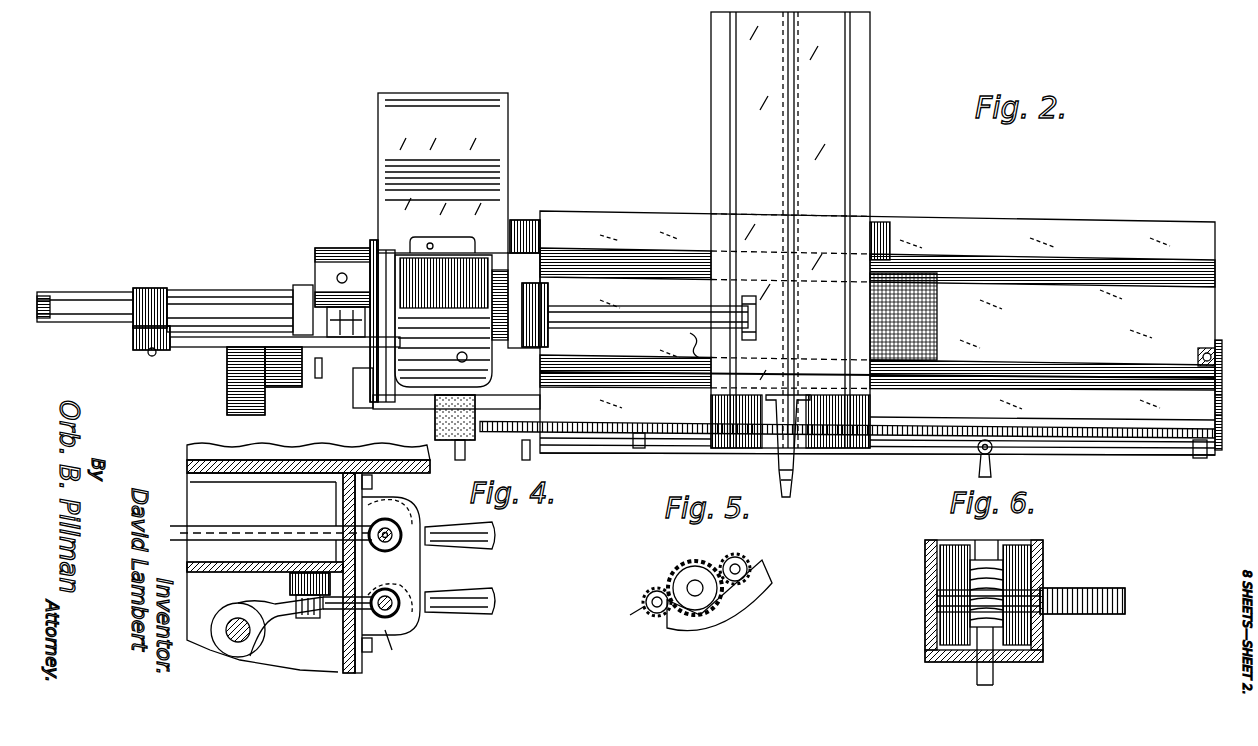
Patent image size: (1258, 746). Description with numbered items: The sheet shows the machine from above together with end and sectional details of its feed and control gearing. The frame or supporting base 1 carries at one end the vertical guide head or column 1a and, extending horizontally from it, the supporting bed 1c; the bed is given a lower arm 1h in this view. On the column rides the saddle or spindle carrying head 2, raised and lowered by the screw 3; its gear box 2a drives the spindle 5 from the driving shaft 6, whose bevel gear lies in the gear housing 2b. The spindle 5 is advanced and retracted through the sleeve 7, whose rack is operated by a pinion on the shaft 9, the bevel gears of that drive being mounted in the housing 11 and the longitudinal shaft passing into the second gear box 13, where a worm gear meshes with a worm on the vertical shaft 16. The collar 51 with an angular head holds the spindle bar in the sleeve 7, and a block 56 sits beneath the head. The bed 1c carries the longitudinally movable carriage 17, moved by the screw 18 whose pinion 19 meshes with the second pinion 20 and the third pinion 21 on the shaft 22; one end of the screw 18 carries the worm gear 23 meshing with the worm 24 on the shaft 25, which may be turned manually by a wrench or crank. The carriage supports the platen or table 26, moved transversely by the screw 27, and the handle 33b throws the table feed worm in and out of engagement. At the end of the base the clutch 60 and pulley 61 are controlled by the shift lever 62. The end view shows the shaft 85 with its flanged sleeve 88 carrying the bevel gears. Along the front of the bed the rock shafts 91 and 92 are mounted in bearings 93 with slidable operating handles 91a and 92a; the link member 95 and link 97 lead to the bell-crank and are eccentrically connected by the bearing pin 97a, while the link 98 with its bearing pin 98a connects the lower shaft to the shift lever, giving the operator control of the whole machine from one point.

In FIG. 2, the frame or supporting base 1 is at (532, 218).
In FIG. 2, the vertical guide head or column 1a is at (395, 200).
In FIG. 2, the supporting bed 1c is at (1062, 226).
In FIG. 2, the arm 1h is at (200, 348).
In FIG. 2, the saddle or spindle carrying head 2 is at (505, 295).
In FIG. 2, the gear box 2a is at (443, 321).
In FIG. 2, the gear housing 2b is at (313, 283).
In FIG. 2, the screw 3 is at (430, 243).
In FIG. 2, the spindle 5 is at (585, 312).
In FIG. 2, the driving shaft 6 is at (337, 276).
In FIG. 2, the sleeve 7 is at (108, 300).
In FIG. 2, the shaft 9 is at (156, 354).
In FIG. 2, the casing or housing 11 is at (133, 345).
In FIG. 2, the second gear box 13 is at (380, 390).
In FIG. 2, the vertical shaft 16 is at (462, 352).
In FIG. 2, the carriage 17 is at (1042, 419).
In FIG. 2, the screw 18 is at (680, 434).
In FIG. 5, the screw 18 is at (645, 608).
In FIG. 6, the screw 18 is at (1082, 591).
In FIG. 2, the pinion 19 is at (1209, 395).
In FIG. 5, the pinion 19 is at (648, 612).
In FIG. 2, the second pinion 20 is at (1215, 410).
In FIG. 5, the second pinion 20 is at (719, 602).
In FIG. 2, the third pinion 21 is at (1198, 350).
In FIG. 5, the third pinion 21 is at (744, 565).
In FIG. 2, the shaft 22 is at (1060, 370).
In FIG. 5, the shaft 22 is at (718, 600).
In FIG. 2, the worm gear 23 is at (145, 382).
In FIG. 6, the worm gear 23 is at (935, 607).
In FIG. 2, the worm 24 is at (330, 316).
In FIG. 6, the worm 24 is at (1003, 570).
In FIG. 2, the shaft 25 is at (460, 460).
In FIG. 6, the shaft 25 is at (972, 662).
In FIG. 2, the platen or table 26 is at (870, 203).
In FIG. 2, the screw 27 is at (795, 462).
In FIG. 2, the handle 33b is at (690, 347).
In FIG. 2, the collar 51 is at (46, 296).
In FIG. 2, the block 56 is at (440, 410).
In FIG. 2, the clutch 60 is at (284, 388).
In FIG. 2, the pulley 61 is at (230, 412).
In FIG. 2, the shift lever 62 is at (318, 380).
In FIG. 4, the shaft 85 is at (230, 612).
In FIG. 4, the flanged sleeve 88 is at (222, 645).
In FIG. 2, the rock shaft 91 is at (978, 453).
In FIG. 4, the rock shaft 91 is at (400, 545).
In FIG. 2, the operating handle 91a is at (992, 462).
In FIG. 4, the operating handle 91a is at (492, 542).
In FIG. 4, the rock shaft 92 is at (398, 612).
In FIG. 4, the operating handle 92a is at (492, 602).
In FIG. 2, the bearings 93 is at (636, 448).
In FIG. 4, the link member 95 is at (381, 573).
In FIG. 4, the link 97 is at (290, 530).
In FIG. 4, the bearing pin 97a is at (387, 532).
In FIG. 4, the link 98 is at (343, 612).
In FIG. 4, the bearing pin 98a is at (400, 632).